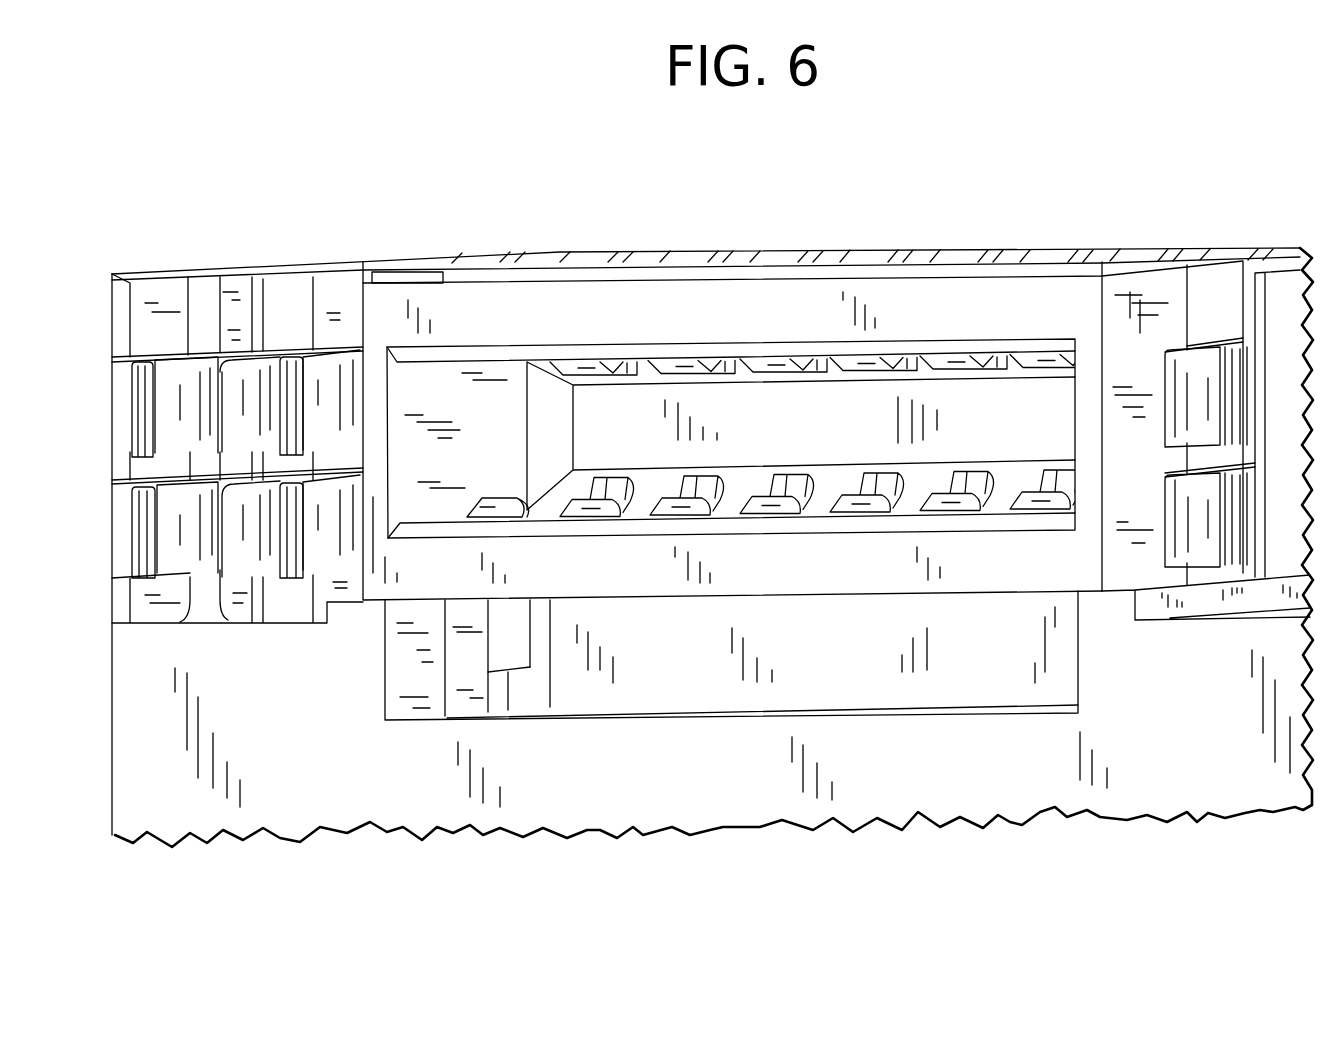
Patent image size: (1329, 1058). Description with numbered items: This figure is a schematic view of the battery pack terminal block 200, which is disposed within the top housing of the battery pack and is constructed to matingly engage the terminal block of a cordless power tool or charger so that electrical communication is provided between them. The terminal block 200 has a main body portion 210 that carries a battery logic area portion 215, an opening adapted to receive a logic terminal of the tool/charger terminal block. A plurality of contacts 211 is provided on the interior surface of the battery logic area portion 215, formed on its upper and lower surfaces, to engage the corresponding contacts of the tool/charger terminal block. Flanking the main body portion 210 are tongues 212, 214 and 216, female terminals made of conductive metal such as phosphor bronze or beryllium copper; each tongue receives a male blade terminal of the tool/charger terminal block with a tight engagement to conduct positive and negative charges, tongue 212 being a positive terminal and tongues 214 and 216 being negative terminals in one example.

The battery pack terminal block 200 is at (422, 196).
The main body portion 210 is at (960, 305).
The contacts 211 is at (805, 340).
The tongue 212 is at (1197, 363).
The tongue 214 is at (293, 370).
The battery logic area portion 215 is at (1025, 292).
The tongue 216 is at (162, 373).